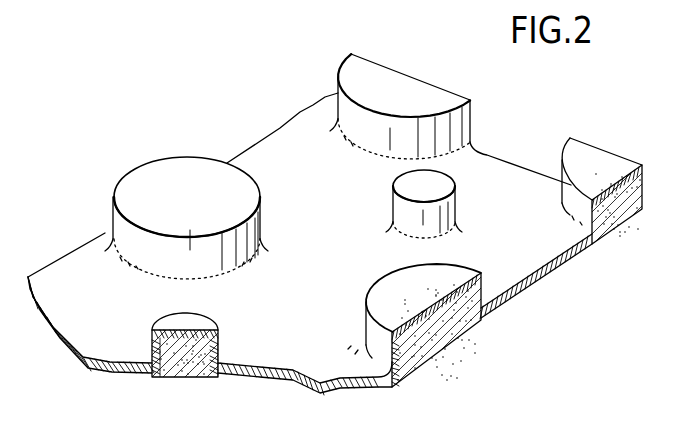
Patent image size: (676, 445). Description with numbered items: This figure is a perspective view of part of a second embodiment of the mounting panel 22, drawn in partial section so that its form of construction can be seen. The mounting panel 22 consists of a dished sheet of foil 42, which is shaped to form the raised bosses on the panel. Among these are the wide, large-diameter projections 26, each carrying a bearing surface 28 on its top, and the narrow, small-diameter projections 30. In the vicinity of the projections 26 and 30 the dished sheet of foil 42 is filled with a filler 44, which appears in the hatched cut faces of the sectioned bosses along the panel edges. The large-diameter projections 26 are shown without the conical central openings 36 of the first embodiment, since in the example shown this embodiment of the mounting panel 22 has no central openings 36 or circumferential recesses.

The mounting panel 22 is at (135, 396).
The wide or large diameter projection 26 is at (248, 230).
The bearing surface 28 is at (185, 207).
The narrow or small diameter projection 30 is at (442, 212).
The conical central opening 36 is at (457, 127).
The dished sheet of foil 42 is at (537, 278).
The filler 44 is at (440, 335).